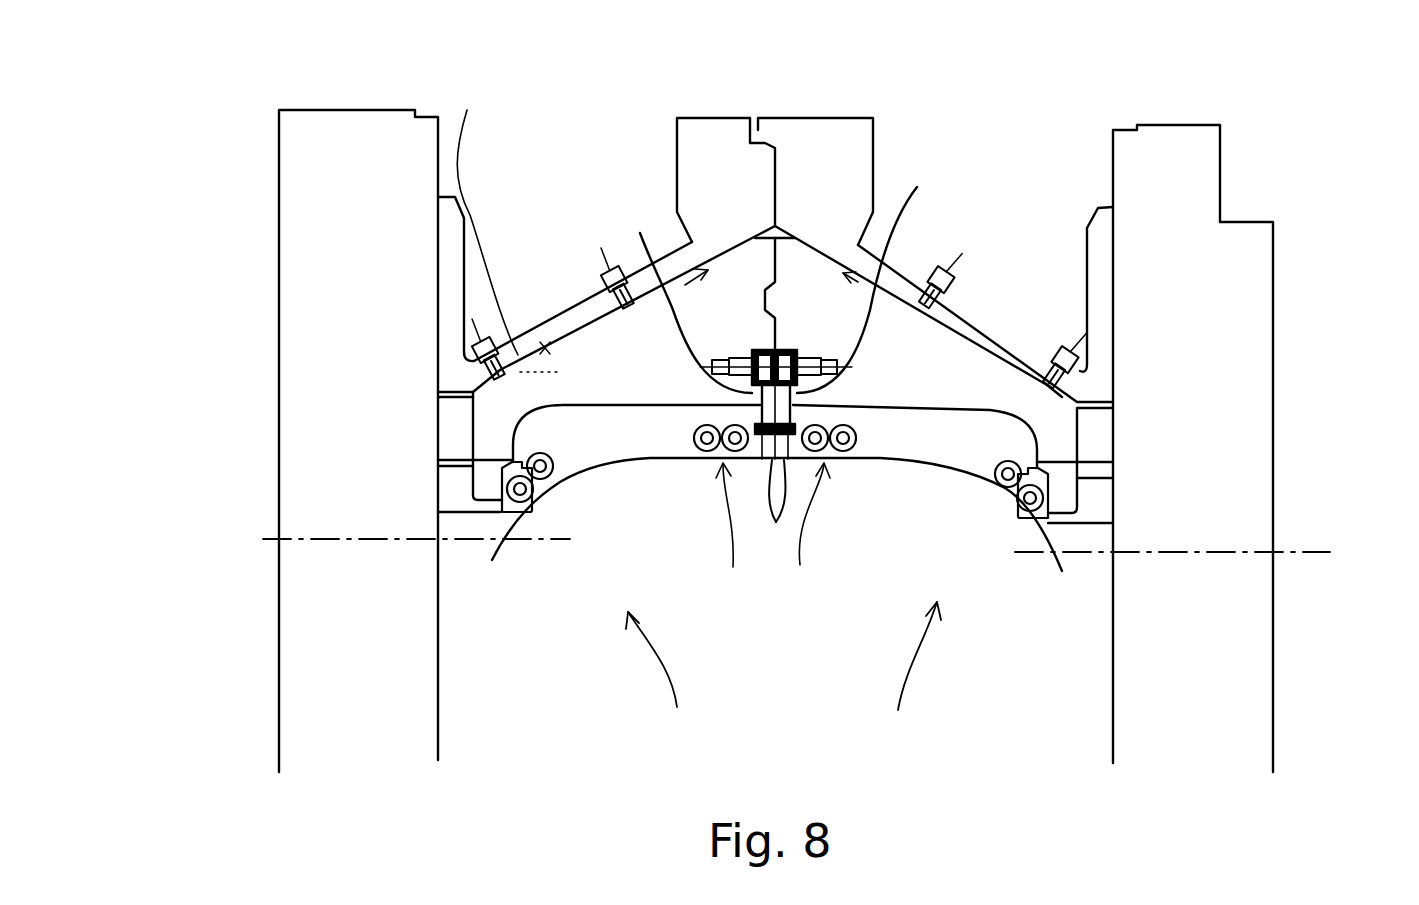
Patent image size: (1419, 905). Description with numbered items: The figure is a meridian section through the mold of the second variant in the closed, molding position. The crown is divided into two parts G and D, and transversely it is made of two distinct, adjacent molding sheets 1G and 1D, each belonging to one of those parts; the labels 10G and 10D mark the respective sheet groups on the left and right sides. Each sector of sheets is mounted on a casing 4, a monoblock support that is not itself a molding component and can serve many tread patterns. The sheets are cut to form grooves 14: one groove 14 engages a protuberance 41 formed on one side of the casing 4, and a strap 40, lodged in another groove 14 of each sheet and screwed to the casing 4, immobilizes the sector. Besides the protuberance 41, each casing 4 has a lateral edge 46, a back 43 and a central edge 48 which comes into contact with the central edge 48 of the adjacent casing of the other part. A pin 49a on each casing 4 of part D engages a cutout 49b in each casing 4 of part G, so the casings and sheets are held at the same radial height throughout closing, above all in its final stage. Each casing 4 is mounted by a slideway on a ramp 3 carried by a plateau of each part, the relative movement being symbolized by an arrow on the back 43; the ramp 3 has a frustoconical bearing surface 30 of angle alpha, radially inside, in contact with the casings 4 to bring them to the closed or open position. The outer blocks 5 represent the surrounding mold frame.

The side frame block 5 is at (300, 155).
The ramp 3 is at (597, 357).
The frustoconical bearing surface 30 is at (487, 214).
The casing 4 is at (560, 320).
The back 43 is at (525, 358).
The strap 40 is at (778, 218).
The pin 49a is at (773, 298).
The cutout 49b is at (767, 262).
The central edge 48 is at (747, 306).
The lateral edge 46 is at (482, 432).
The protuberance 41 is at (510, 462).
The groove 14 is at (530, 447).
The molding sheet of part G 1G is at (632, 440).
The molding sheet of part D 1D is at (940, 453).
The left feed direction 10G is at (737, 530).
The right feed direction 10D is at (807, 530).
The mold part G is at (661, 680).
The mold part D is at (904, 681).